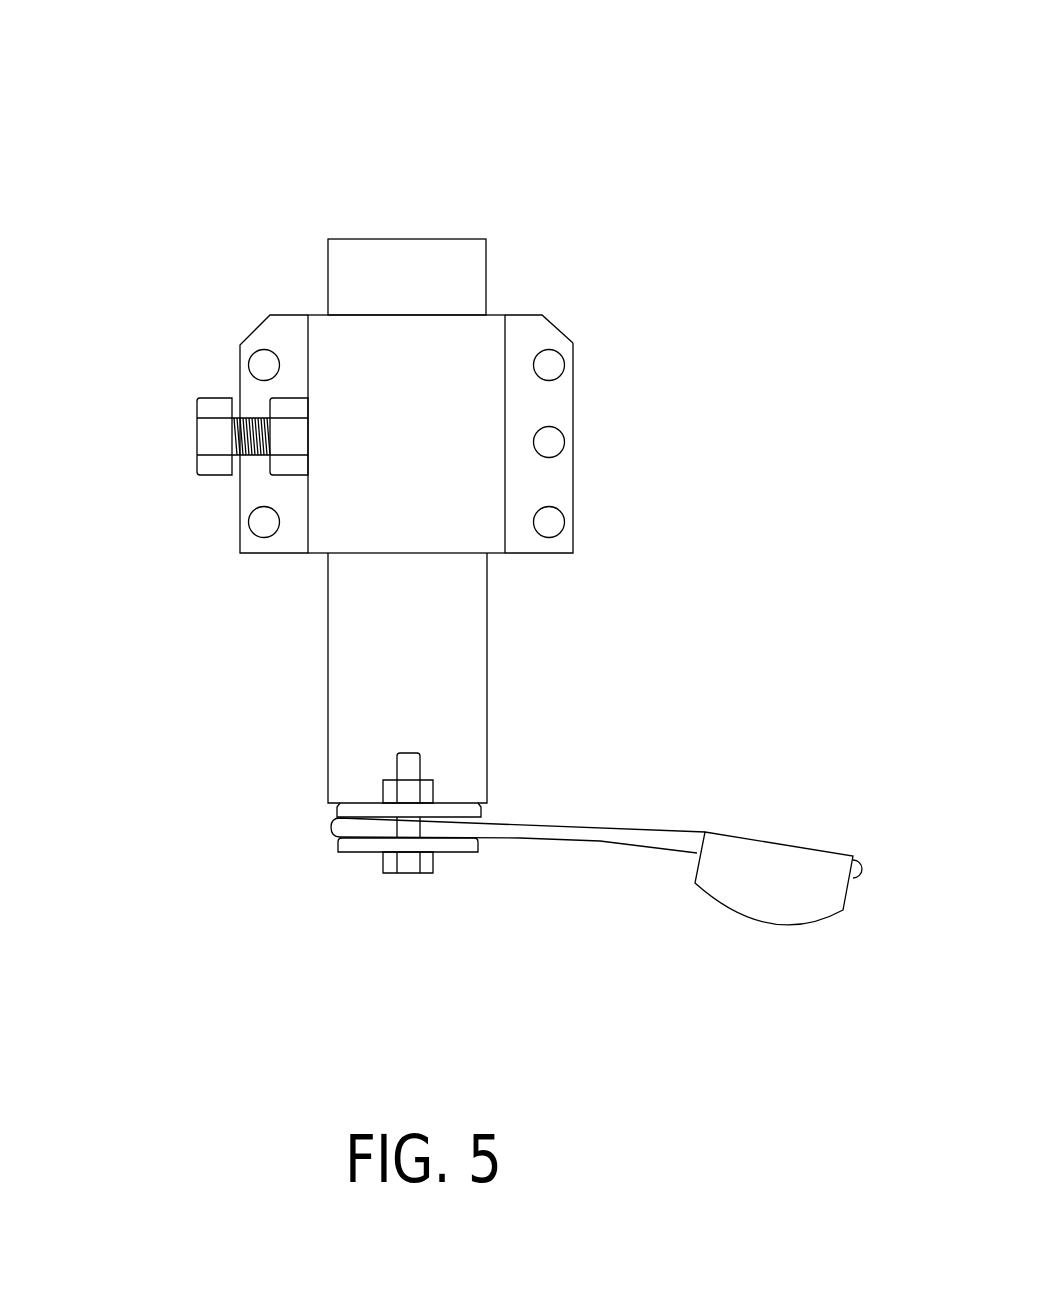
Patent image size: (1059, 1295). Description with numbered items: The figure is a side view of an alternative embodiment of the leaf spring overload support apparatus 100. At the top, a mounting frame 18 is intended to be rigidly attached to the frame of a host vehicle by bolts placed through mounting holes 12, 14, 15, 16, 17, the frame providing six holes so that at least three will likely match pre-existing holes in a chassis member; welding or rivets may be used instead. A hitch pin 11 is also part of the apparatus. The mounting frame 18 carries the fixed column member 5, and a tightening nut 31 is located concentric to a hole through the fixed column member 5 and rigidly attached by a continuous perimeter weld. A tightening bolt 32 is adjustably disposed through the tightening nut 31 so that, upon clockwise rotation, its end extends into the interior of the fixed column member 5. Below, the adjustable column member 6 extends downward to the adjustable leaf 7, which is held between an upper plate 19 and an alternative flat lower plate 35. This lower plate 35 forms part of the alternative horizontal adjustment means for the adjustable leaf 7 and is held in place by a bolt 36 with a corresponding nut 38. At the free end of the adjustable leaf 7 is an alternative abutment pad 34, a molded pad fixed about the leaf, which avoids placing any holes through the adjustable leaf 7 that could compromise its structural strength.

The apparatus 100 is at (418, 158).
The fixed column member 5 is at (396, 382).
The mounting frame 18 is at (525, 330).
The hitch pin 11 is at (522, 431).
The mounting hole 12 is at (257, 363).
The mounting hole 14 is at (265, 523).
The mounting hole 15 is at (548, 363).
The mounting hole 16 is at (558, 450).
The mounting hole 17 is at (558, 530).
The tightening nut 31 is at (288, 435).
The tightening bolt 32 is at (213, 437).
The adjustable column member 6 is at (410, 668).
The nut 38 is at (412, 790).
The upper plate 19 is at (368, 812).
The adjustable leaf 7 is at (603, 837).
The flat lower plate 35 is at (378, 840).
The bolt 36 is at (408, 863).
The abutment pad 34 is at (765, 890).